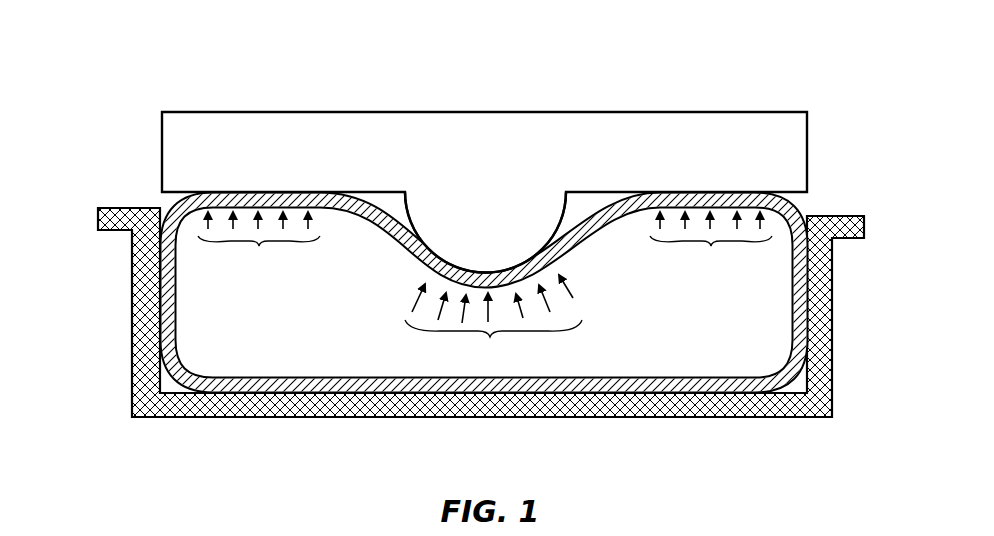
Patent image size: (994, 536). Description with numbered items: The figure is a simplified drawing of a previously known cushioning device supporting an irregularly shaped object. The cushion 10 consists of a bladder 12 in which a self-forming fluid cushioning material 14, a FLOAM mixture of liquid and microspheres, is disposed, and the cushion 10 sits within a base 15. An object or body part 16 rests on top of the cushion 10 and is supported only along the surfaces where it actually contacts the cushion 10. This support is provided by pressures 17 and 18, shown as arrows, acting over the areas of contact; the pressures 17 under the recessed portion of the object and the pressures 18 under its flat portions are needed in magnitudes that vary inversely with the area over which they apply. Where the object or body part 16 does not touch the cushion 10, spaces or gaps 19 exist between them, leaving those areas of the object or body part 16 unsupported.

The cushion 10 is at (122, 195).
The bladder 12 is at (800, 218).
The self-forming fluid cushioning material 14 is at (683, 326).
The base 15 is at (683, 452).
The object or body part 16 is at (792, 140).
The pressure 17 is at (493, 320).
The pressure 18 is at (485, 241).
The spaces or gaps 19 is at (390, 205).